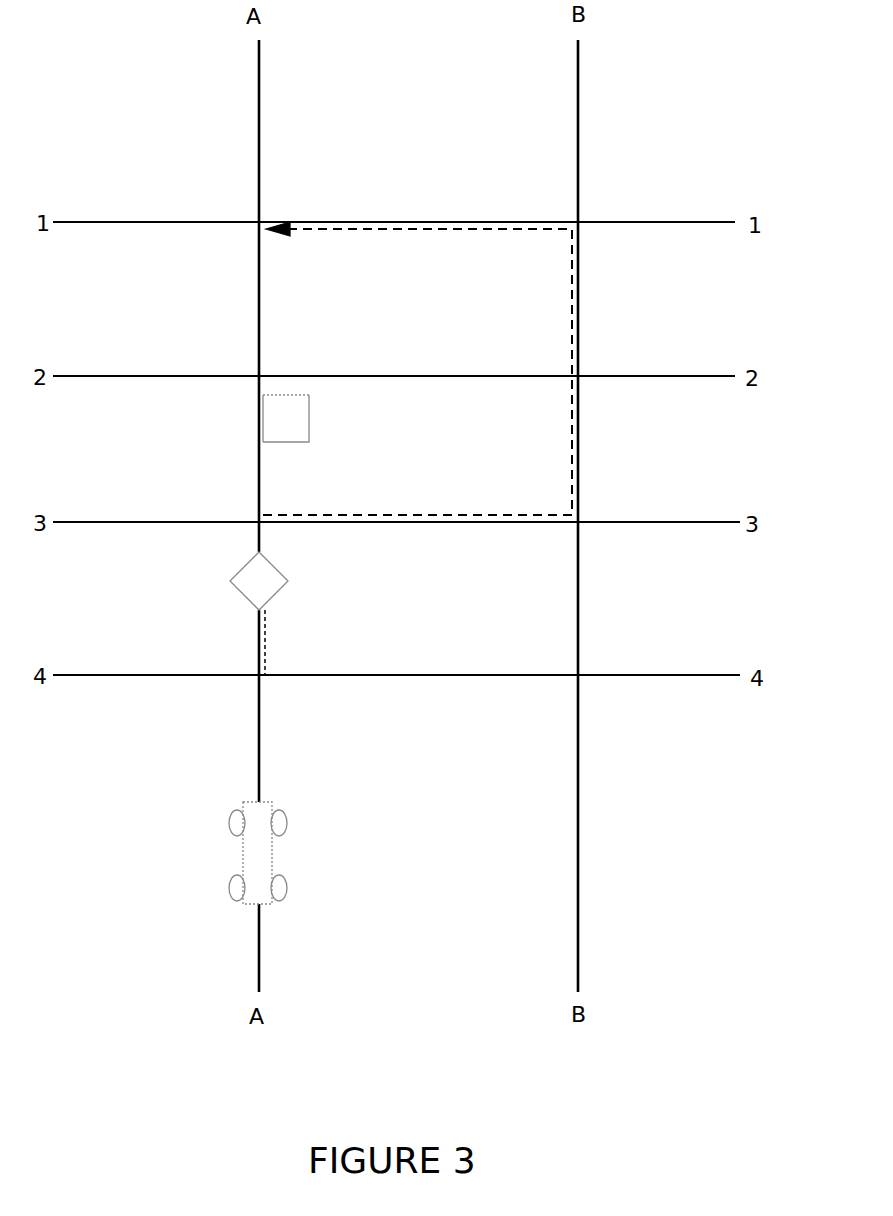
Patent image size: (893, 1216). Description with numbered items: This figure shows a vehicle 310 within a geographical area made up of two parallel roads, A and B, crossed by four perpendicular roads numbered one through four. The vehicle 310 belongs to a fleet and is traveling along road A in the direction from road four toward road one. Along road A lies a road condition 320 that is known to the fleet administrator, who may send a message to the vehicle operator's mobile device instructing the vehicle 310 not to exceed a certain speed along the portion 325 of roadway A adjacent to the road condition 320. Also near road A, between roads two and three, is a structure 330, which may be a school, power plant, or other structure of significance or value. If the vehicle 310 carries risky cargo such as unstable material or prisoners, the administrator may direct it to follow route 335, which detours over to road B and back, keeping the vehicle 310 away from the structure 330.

The vehicle 310 is at (253, 905).
The road condition 320 is at (234, 580).
The portion 325 is at (265, 638).
The structure 330 is at (309, 420).
The route 335 is at (455, 518).